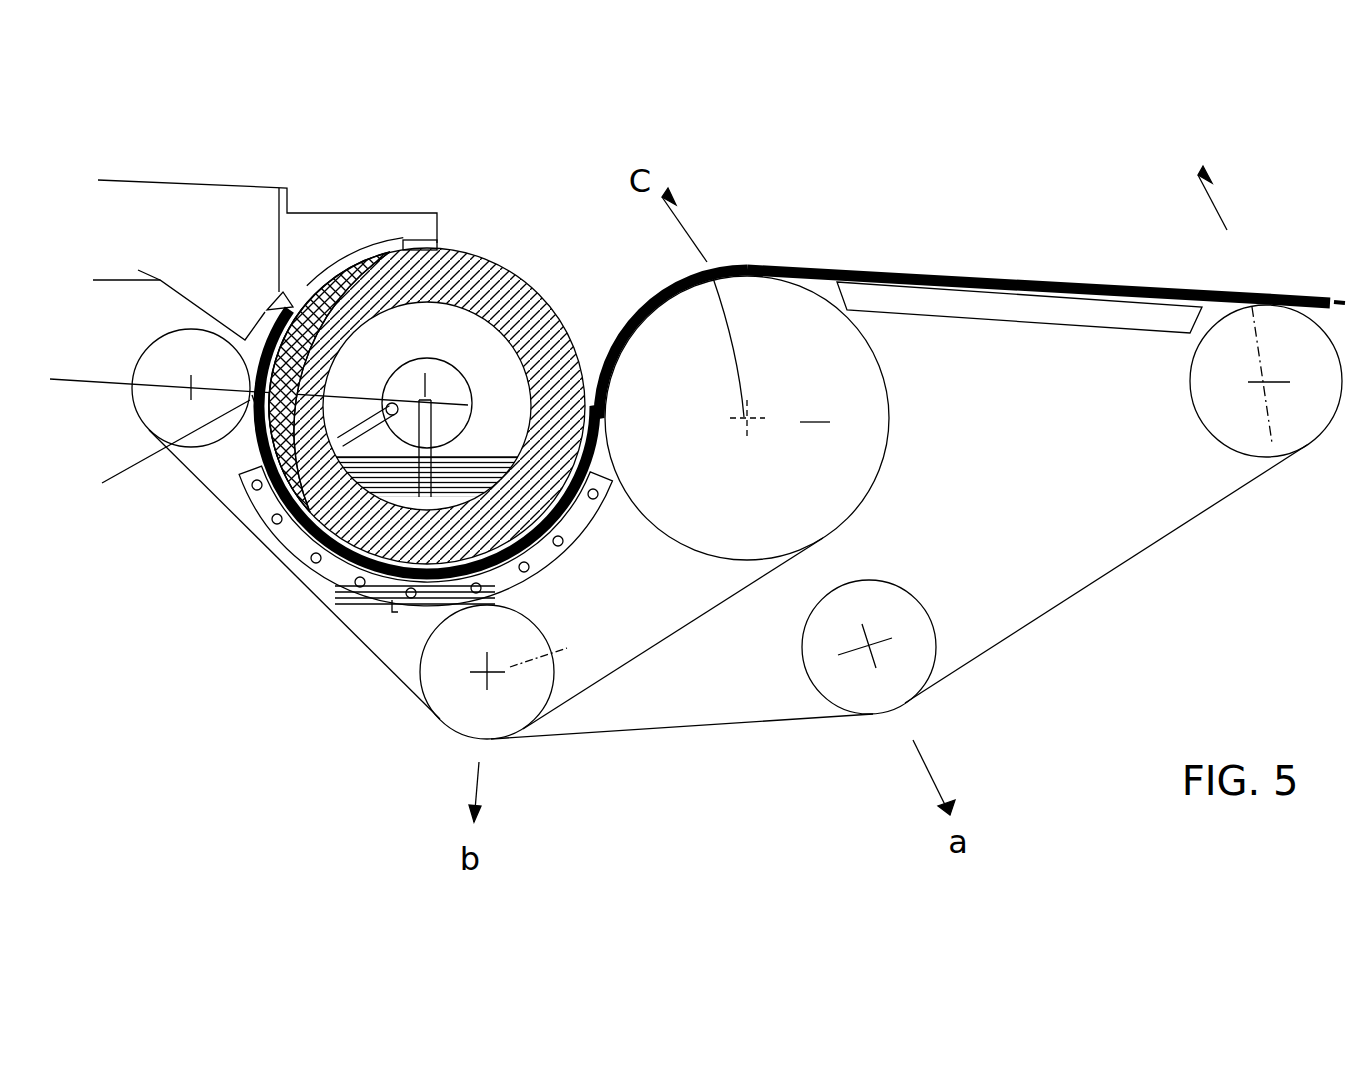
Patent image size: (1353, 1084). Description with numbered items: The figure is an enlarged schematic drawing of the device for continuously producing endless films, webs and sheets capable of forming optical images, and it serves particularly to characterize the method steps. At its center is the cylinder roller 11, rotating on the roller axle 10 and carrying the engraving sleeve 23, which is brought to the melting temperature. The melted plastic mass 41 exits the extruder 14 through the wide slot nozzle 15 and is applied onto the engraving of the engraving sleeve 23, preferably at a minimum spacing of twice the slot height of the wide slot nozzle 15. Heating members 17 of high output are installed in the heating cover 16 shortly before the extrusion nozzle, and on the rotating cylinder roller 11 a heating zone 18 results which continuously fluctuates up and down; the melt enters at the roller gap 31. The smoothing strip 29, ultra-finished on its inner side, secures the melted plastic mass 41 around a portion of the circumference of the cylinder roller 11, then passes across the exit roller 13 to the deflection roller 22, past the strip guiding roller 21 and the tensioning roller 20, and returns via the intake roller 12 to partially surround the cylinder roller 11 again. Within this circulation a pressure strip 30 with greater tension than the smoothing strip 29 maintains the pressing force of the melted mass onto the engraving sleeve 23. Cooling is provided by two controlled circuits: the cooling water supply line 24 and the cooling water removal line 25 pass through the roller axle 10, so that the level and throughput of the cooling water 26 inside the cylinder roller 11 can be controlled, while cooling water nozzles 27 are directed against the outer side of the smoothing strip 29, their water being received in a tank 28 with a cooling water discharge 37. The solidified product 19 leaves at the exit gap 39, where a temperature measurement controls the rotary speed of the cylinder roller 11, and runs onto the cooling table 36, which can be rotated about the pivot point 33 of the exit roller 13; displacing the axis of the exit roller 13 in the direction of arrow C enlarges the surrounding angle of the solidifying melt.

The roller axle 10 is at (448, 387).
The cylinder roller 11 is at (480, 258).
The intake roller 12 is at (145, 402).
The exit roller 13 is at (870, 442).
The extruder 14 is at (203, 197).
The wide slot nozzle 15 is at (263, 312).
The heating cover 16 is at (344, 227).
The heating member 17 is at (407, 236).
The heating zone 18 is at (252, 407).
The product 19 is at (957, 267).
The tensioning roller 20 is at (450, 688).
The strip guiding roller 21 is at (897, 622).
The deflection roller 22 is at (1252, 300).
The engraving sleeve 23 is at (540, 287).
The cooling water supply line 24 is at (300, 550).
The cooling water removal line 25 is at (430, 450).
The cooling water 26 is at (365, 575).
The cooling water nozzle 27 is at (562, 548).
The tank 28 is at (292, 538).
The smoothing strip 29 is at (782, 720).
The pressure strip 30 is at (670, 640).
The roller gap 31 is at (248, 559).
The pivot point 33 is at (749, 418).
The cooling table 36 is at (1022, 310).
The cooling water discharge 37 is at (397, 607).
The exit gap 39 is at (595, 373).
The melted plastic mass 41 is at (283, 292).